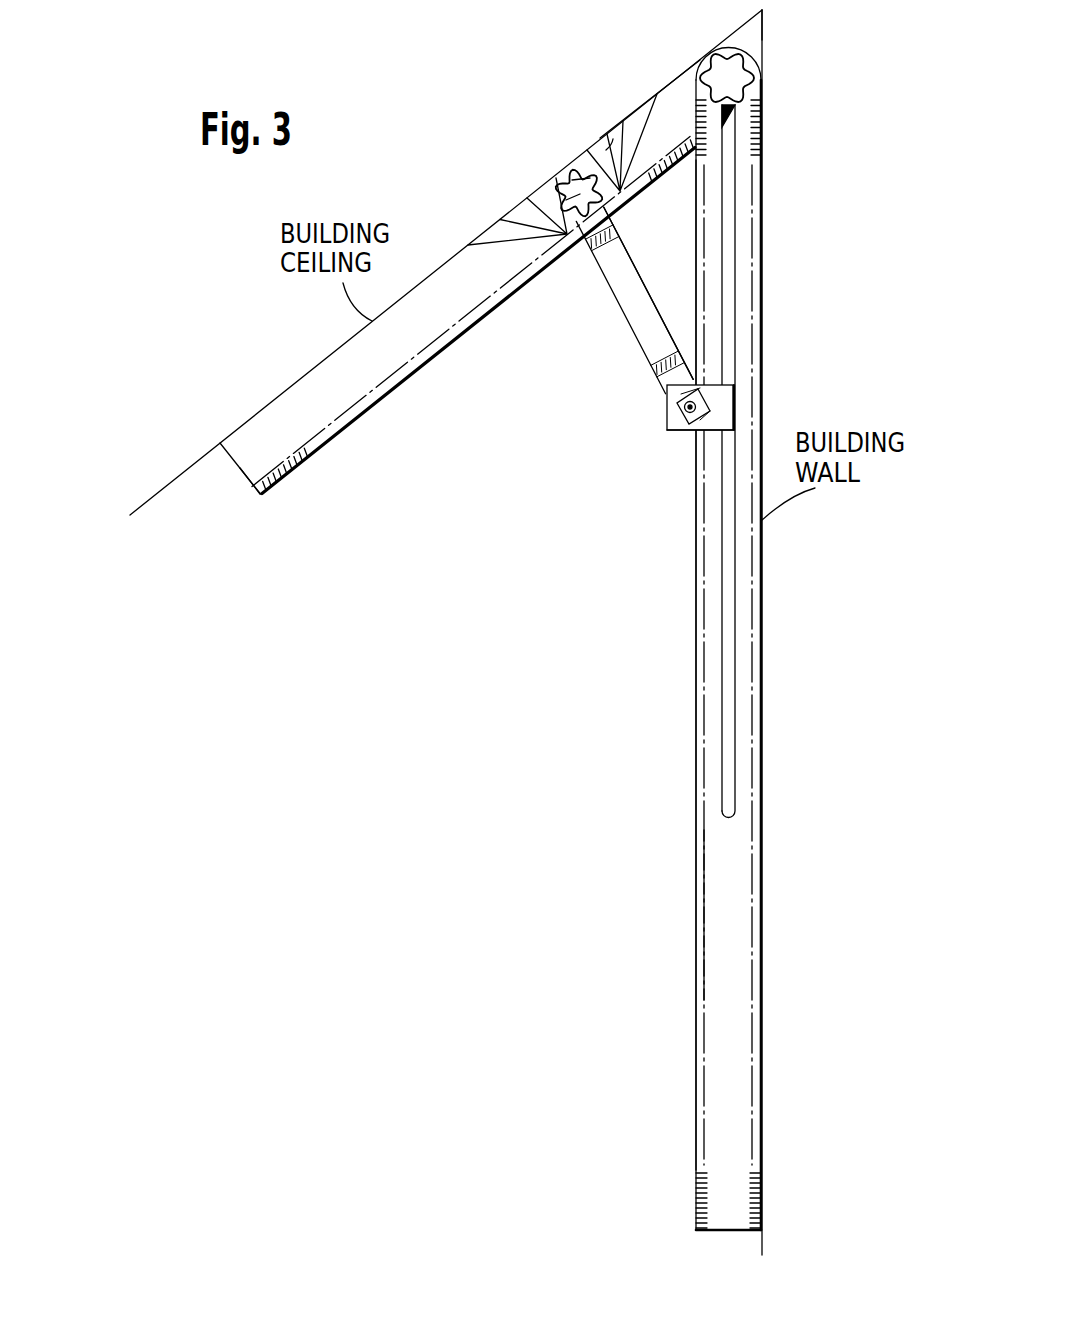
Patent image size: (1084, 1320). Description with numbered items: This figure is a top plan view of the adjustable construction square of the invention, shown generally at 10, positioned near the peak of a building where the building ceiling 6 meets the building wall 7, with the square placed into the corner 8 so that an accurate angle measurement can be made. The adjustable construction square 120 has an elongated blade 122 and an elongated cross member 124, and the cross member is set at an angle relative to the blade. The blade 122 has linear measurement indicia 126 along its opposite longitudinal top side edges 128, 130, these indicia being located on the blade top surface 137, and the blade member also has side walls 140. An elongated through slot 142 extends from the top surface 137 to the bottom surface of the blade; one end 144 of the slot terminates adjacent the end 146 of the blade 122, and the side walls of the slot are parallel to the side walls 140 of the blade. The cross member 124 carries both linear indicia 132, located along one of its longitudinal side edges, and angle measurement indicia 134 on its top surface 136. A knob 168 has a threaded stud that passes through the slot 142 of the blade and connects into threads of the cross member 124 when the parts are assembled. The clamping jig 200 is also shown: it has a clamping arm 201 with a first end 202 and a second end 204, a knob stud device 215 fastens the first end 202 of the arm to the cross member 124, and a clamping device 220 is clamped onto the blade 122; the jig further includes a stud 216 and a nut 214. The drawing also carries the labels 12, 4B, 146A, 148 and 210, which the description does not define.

The building ceiling 6 is at (447, 262).
The building wall 7 is at (763, 563).
The corner 8 is at (763, 12).
The adjustable construction square assembly 10 is at (838, 83).
The ceiling member end 12 is at (257, 496).
The view reference 4B is at (276, 521).
The adjustable construction square 120 is at (288, 384).
The elongated blade 122 is at (767, 649).
The elongated cross member 124 is at (370, 412).
The linear measurement indicia 126 is at (758, 160).
The longitudinal top side edge 128 is at (696, 1184).
The longitudinal top side edge 130 is at (747, 1195).
The linear indicia 132 is at (284, 479).
The angle measurement indicia 134 is at (614, 144).
The top surface of cross member 136 is at (241, 466).
The top surface of blade 137 is at (722, 903).
The side walls of blade 140 is at (697, 678).
The elongated through slot 142 is at (723, 582).
The end of slot 144 is at (735, 108).
The end of blade 146 is at (727, 46).
The lower end cap 146A is at (732, 1232).
The channel lower end 148 is at (726, 816).
The knob 168 is at (740, 72).
The clamping jig 200 is at (621, 316).
The clamping arm 201 is at (633, 266).
The first end of clamping arm 202 is at (560, 180).
The second end of clamping arm 204 is at (695, 432).
The mount body 210 is at (566, 200).
The nut 214 is at (684, 424).
The knob stud device 215 is at (578, 178).
The stud 216 is at (681, 406).
The clamping device 220 is at (740, 407).